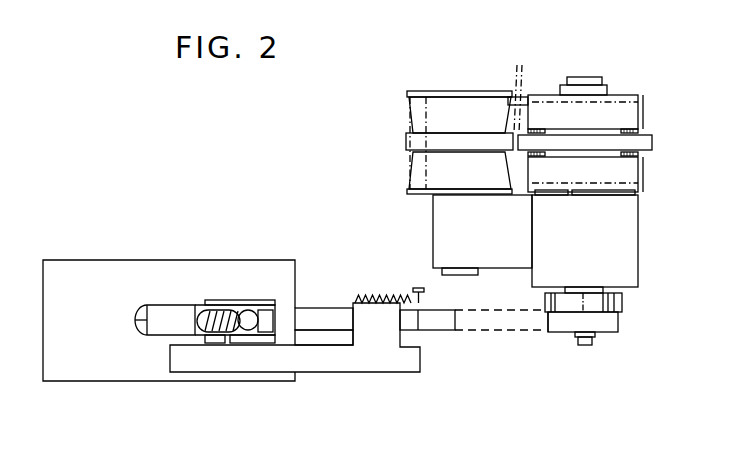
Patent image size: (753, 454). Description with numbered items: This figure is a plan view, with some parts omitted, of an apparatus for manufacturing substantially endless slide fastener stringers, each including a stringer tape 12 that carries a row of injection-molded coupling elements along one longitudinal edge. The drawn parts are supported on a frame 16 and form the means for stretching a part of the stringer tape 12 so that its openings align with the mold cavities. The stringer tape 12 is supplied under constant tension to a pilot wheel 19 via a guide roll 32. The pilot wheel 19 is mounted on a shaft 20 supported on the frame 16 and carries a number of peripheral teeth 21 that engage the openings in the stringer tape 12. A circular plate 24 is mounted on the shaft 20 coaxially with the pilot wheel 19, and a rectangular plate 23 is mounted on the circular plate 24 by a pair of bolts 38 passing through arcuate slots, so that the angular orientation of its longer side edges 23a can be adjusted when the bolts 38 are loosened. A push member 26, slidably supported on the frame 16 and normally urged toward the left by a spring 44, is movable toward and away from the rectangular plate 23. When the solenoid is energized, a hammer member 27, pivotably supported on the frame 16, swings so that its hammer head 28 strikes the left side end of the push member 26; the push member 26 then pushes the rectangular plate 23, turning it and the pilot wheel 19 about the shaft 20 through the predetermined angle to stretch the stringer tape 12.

The stringer tape 12 is at (523, 86).
The frame 16 is at (128, 382).
The pilot wheel 19 is at (622, 96).
The shaft 20 is at (576, 77).
The peripheral teeth 21 is at (645, 157).
The rectangular plate 23 is at (610, 323).
The longer side edges 23a is at (548, 322).
The circular plate 24 is at (622, 303).
The push member 26 is at (437, 326).
The hammer member 27 is at (182, 298).
The hammer head 28 is at (247, 317).
The guide roll 32 is at (443, 103).
The bolts 38 is at (579, 346).
The spring 44 is at (372, 294).